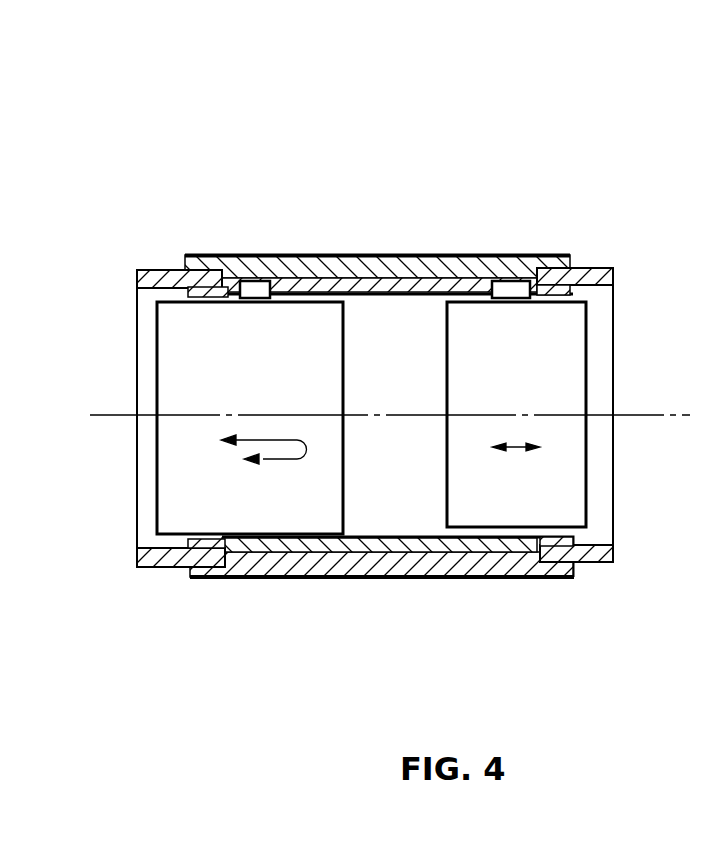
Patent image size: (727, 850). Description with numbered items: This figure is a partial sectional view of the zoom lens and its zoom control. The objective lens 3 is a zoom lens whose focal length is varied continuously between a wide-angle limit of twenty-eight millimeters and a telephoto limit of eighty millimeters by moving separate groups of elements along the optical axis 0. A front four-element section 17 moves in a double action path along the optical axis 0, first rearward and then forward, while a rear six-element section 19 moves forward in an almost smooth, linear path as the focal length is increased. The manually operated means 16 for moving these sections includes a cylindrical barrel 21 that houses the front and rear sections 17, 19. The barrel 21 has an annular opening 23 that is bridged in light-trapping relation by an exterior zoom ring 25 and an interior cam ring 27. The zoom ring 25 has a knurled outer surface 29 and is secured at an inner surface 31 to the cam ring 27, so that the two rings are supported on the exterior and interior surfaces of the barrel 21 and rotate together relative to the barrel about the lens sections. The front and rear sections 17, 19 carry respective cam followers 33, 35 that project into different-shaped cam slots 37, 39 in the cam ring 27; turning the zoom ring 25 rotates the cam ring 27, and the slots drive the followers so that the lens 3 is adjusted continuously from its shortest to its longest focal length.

The optical axis 0 is at (95, 413).
The objective lens 3 is at (156, 462).
The manually operated means 16 is at (333, 240).
The front four-element section 17 is at (337, 357).
The rear six-element section 19 is at (447, 345).
The cylindrical barrel 21 is at (160, 272).
The annular opening 23 is at (205, 290).
The exterior zoom ring 25 is at (283, 255).
The interior cam ring 27 is at (371, 290).
The knurled outer surface 29 is at (428, 280).
The inner surface 31 is at (412, 280).
The cam follower 33 is at (258, 292).
The cam follower 35 is at (512, 290).
The cam slot 37 is at (255, 298).
The cam slot 39 is at (515, 298).